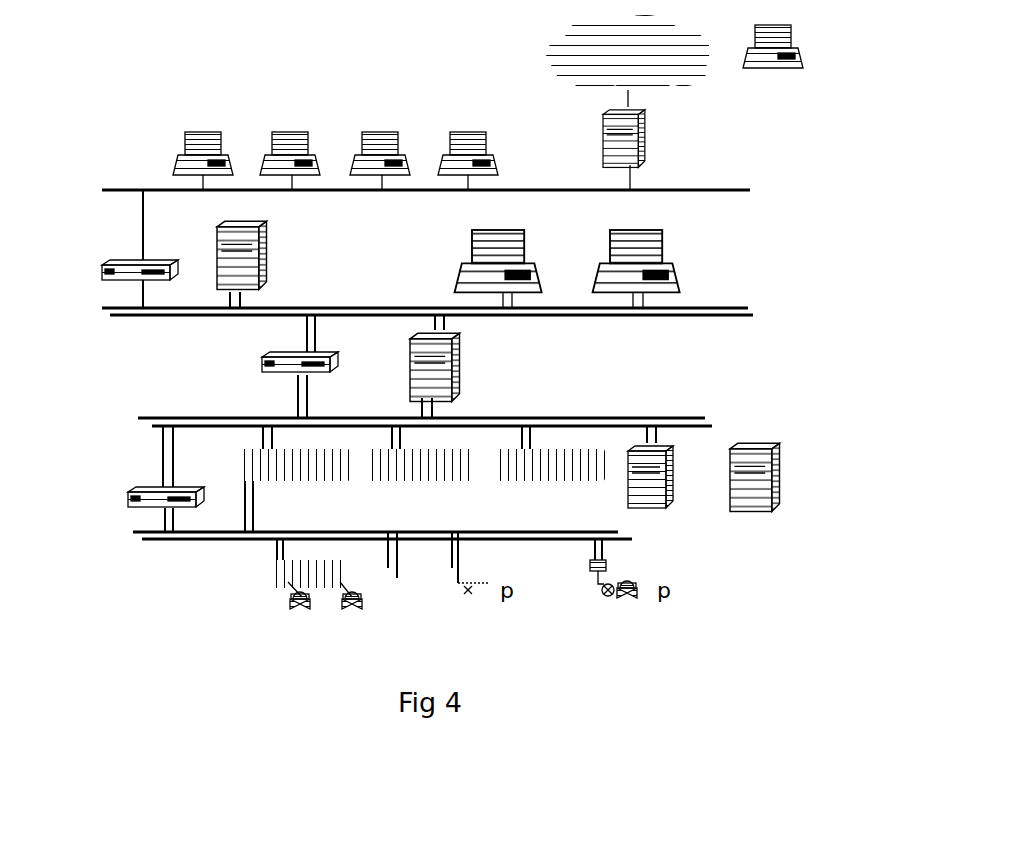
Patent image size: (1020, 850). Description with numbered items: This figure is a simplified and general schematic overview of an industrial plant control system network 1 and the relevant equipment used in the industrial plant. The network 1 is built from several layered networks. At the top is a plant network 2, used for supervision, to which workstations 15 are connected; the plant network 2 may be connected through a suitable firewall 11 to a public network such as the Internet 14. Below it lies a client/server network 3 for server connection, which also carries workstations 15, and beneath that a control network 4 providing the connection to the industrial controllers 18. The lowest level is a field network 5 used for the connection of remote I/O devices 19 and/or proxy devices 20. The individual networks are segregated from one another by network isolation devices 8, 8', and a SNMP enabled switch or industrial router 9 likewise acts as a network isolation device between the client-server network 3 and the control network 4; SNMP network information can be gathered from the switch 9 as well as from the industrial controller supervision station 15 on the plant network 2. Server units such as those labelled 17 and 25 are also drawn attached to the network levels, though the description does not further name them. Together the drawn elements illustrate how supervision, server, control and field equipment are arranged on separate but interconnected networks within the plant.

The industrial plant control system network 1 is at (229, 66).
The plant network 2 is at (436, 190).
The client/server network 3 is at (439, 313).
The control network 4 is at (735, 415).
The field network 5 is at (658, 538).
The network isolation device 8 is at (107, 249).
The network isolation device 8' is at (187, 366).
The SNMP enabled switch or industrial router 9 is at (115, 491).
The firewall 11 is at (655, 137).
The Internet 14 is at (705, 75).
The workstation 15 is at (163, 137).
The server 17 is at (725, 469).
The industrial controller 18 is at (227, 460).
The remote I/O device 19 is at (282, 599).
The proxy device 20 is at (680, 606).
The server 25 is at (477, 365).